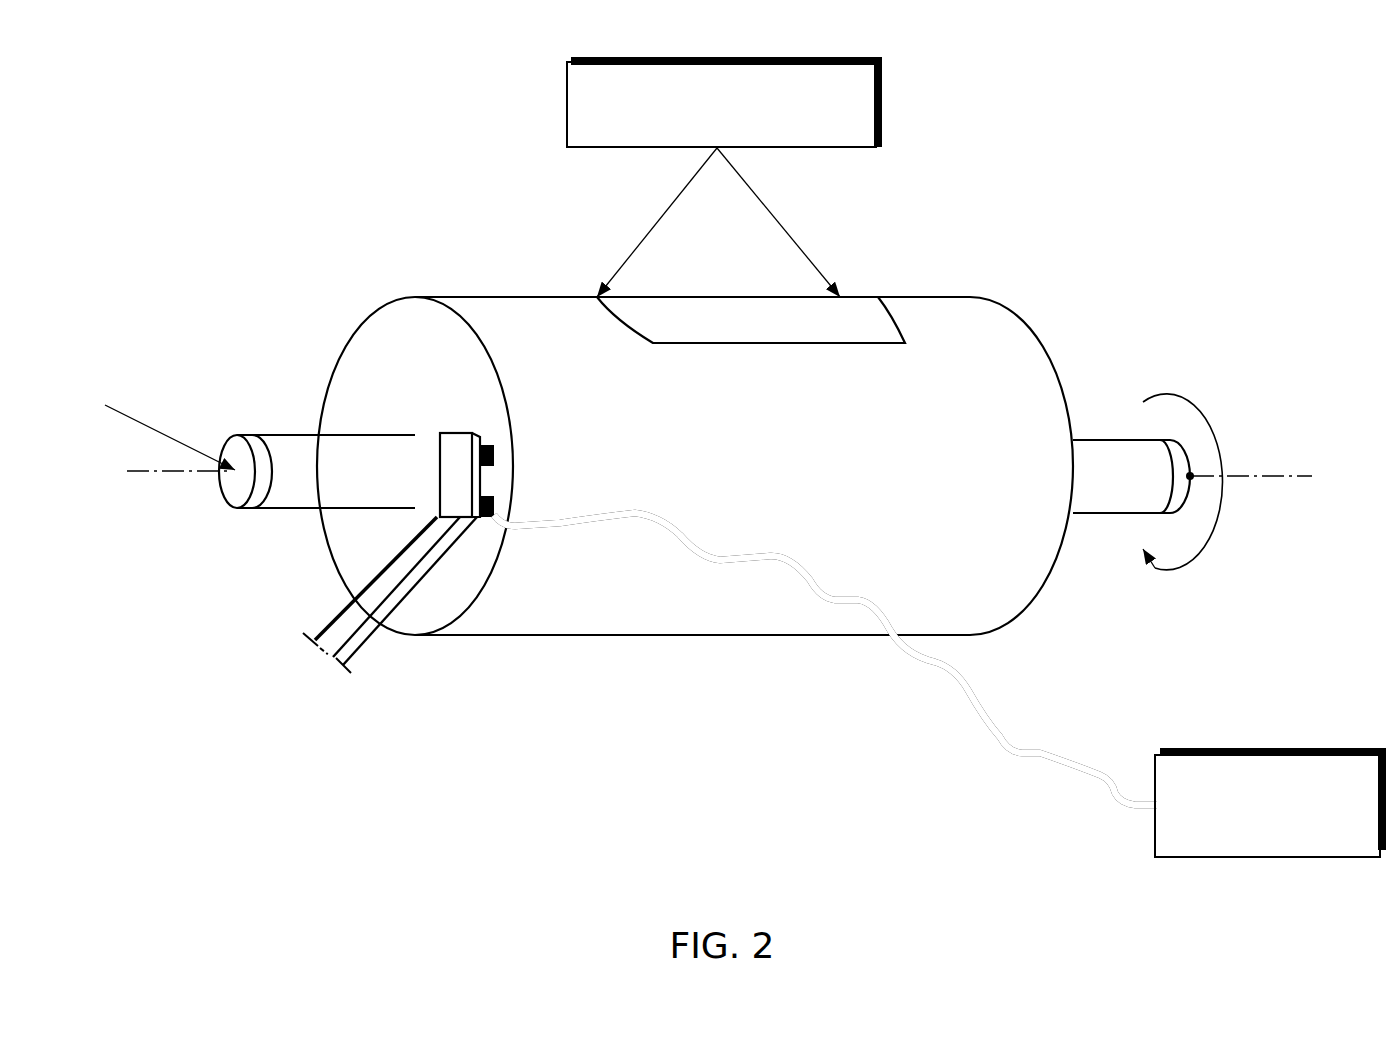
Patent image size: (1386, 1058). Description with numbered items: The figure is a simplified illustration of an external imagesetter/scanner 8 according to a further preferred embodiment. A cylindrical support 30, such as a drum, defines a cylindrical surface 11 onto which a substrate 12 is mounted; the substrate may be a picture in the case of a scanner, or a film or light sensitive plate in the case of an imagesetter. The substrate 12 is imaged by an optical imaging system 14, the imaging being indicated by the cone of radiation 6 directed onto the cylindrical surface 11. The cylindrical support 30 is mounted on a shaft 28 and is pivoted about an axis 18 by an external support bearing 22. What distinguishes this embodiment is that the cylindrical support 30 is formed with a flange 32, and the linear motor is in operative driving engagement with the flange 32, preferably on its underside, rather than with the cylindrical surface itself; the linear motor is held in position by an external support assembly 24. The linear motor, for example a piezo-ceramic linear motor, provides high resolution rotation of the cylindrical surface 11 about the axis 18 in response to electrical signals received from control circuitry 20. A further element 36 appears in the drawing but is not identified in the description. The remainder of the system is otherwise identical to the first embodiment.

The cone of radiation 6 is at (622, 262).
The external imagesetter/scanner 8 is at (1035, 237).
The cylindrical surface 11 is at (988, 347).
The substrate 12 is at (883, 313).
The optical imaging system 14 is at (880, 100).
The axis 18 is at (172, 473).
The control circuitry 20 is at (1203, 745).
The external support bearing 22 is at (1285, 400).
The external support assembly 24 is at (363, 642).
The shaft 28 is at (318, 460).
The cylindrical support 30 is at (678, 607).
The flange 32 is at (358, 551).
The sensor 36 is at (455, 428).